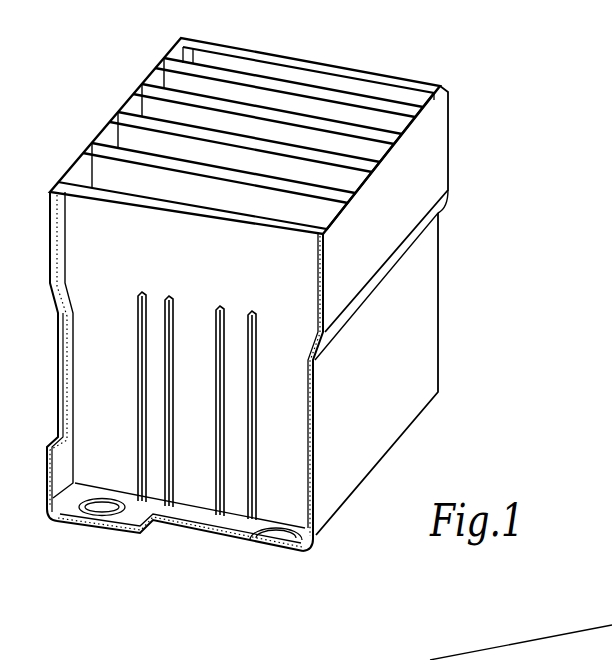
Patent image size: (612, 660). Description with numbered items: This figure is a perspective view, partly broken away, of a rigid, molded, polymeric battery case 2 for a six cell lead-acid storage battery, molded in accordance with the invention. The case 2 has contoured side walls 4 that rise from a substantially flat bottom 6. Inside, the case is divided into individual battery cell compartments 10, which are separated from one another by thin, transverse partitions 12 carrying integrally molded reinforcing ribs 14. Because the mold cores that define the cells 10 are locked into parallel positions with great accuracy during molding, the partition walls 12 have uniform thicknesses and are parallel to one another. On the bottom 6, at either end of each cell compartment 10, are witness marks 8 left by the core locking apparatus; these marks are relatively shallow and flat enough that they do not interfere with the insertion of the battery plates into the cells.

The battery case 2 is at (449, 121).
The side walls 4 is at (281, 53).
The bottom 6 is at (183, 513).
The witness marks 8 is at (100, 508).
The cell compartments 10 is at (133, 142).
The partitions 12 is at (312, 90).
The reinforcing ribs 14 is at (248, 318).